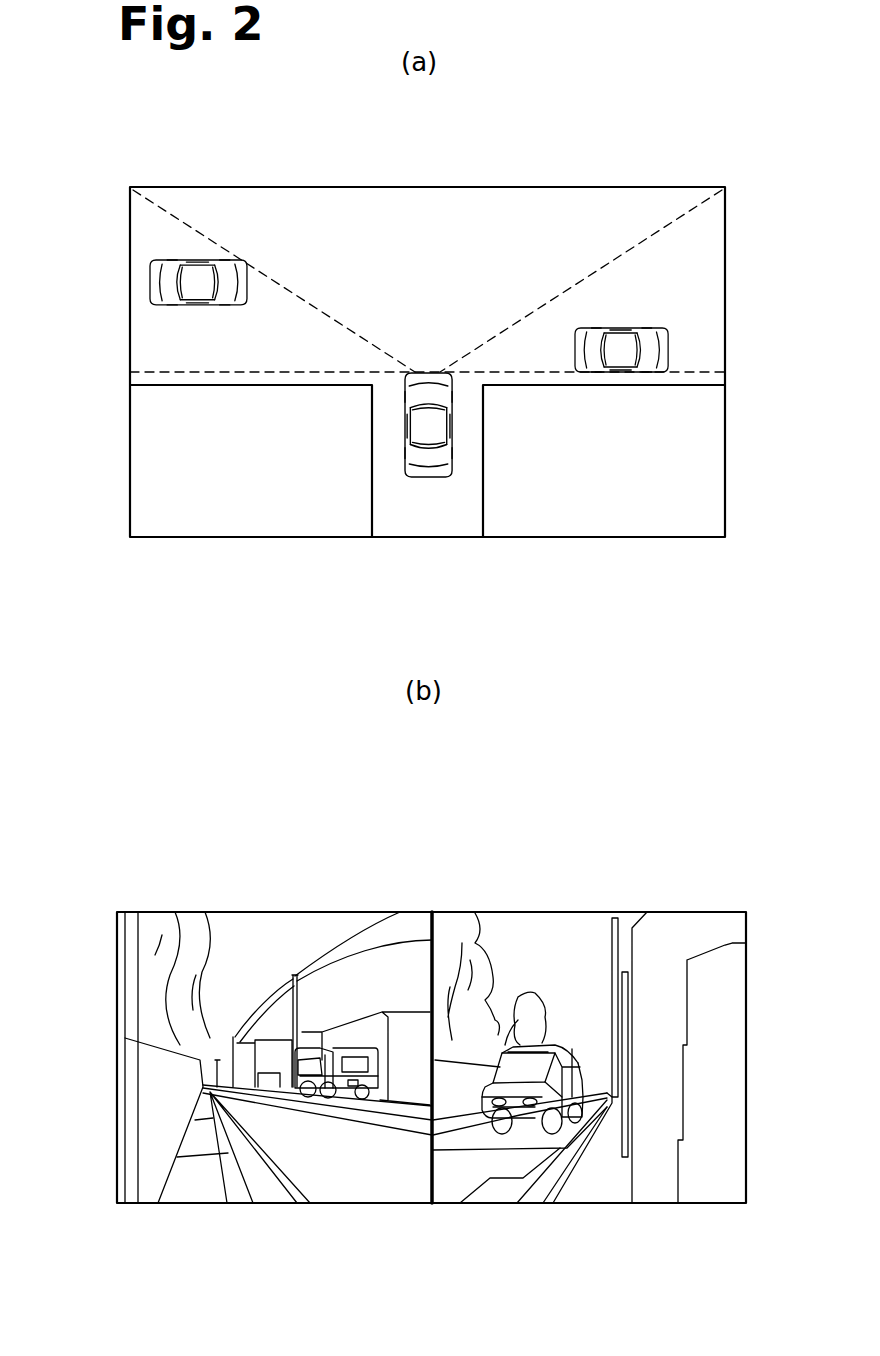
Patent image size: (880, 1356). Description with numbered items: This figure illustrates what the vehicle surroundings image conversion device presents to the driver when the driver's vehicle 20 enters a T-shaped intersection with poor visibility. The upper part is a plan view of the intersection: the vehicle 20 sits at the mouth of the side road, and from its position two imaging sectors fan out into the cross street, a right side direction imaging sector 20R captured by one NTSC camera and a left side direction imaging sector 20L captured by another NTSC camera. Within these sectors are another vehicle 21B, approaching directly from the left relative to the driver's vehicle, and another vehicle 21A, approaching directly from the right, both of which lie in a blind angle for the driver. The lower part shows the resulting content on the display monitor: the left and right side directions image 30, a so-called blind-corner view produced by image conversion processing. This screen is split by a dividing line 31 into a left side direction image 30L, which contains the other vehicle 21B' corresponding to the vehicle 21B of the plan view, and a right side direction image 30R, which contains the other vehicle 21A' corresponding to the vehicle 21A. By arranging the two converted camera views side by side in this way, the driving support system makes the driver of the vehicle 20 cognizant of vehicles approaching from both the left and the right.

The vehicle 20 is at (428, 479).
The left side direction imaging sector 20L is at (190, 223).
The right side direction imaging sector 20R is at (664, 224).
The other vehicle 21A is at (690, 350).
The other vehicle 21B is at (143, 282).
The left and right side directions image 30 is at (520, 842).
The dividing line 31 is at (422, 933).
The left side direction image 30L is at (428, 1232).
The right side direction image 30R is at (742, 1232).
The other vehicle 21A' is at (532, 995).
The other vehicle 21B' is at (339, 977).